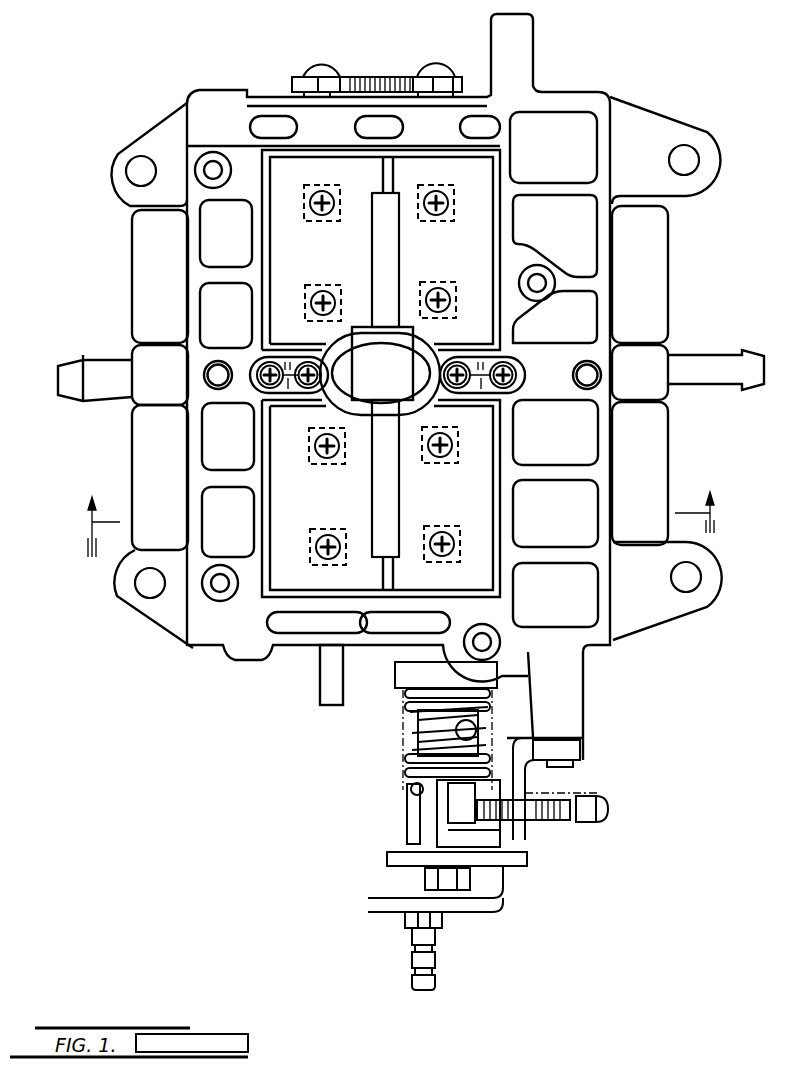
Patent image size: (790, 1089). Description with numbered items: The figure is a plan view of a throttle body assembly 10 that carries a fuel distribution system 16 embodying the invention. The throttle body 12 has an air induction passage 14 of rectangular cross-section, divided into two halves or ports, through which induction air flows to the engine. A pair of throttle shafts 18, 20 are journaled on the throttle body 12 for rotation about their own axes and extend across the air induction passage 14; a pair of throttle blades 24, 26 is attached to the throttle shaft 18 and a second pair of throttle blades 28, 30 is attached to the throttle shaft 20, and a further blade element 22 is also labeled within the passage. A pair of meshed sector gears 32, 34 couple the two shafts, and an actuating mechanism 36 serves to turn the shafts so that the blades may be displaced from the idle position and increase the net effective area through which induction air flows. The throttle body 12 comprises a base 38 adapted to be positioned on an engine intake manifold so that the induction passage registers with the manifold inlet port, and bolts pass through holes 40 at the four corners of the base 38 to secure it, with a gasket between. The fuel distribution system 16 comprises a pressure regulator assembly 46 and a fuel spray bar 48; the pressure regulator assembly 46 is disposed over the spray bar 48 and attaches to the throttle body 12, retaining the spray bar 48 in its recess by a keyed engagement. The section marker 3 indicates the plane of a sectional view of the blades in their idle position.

The throttle body assembly 10 is at (672, 93).
The throttle body 12 is at (570, 92).
The air induction passage 14 is at (275, 247).
The fuel distribution system 16 is at (438, 342).
The throttle shaft 18 is at (441, 182).
The throttle shaft 20 is at (323, 225).
The contact screw 22 is at (388, 438).
The throttle blade 24 is at (454, 509).
The throttle blade 26 is at (470, 266).
The throttle blade 28 is at (330, 509).
The throttle blade 30 is at (300, 286).
The sector gear 32 is at (405, 74).
The sector gear 34 is at (350, 73).
The actuating mechanism 36 is at (504, 904).
The base 38 is at (655, 440).
The holes 40 is at (140, 168).
The pressure regulator assembly 46 is at (365, 420).
The fuel spray bar 48 is at (399, 265).
The section line 3 is at (393, 524).